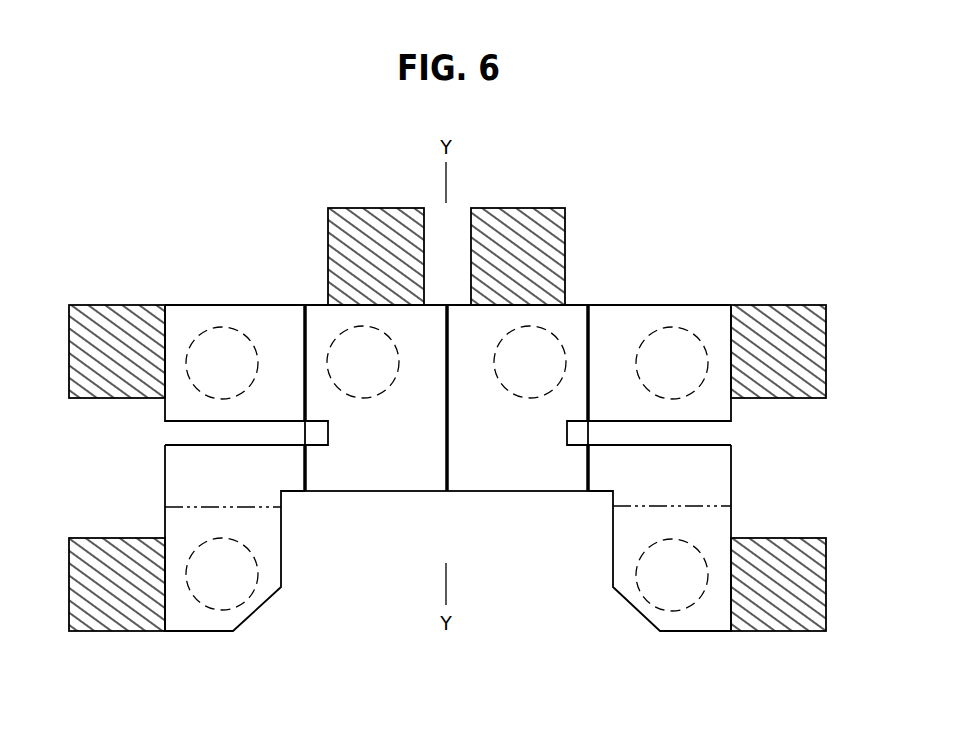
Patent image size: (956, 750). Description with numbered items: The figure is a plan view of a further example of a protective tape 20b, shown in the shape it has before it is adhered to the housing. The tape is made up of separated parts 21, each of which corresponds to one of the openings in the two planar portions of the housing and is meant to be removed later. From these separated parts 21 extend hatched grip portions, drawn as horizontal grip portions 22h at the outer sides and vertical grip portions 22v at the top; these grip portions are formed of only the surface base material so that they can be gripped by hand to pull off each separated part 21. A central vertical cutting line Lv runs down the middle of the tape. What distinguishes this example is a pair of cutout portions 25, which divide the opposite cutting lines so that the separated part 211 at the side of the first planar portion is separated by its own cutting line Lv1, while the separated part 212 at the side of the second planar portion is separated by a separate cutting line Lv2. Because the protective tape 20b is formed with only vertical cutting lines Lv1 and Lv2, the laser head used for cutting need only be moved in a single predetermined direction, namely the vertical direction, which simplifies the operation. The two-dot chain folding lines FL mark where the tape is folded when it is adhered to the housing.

The protective tape 20b is at (656, 303).
The separated part 21 is at (390, 460).
The separated part 211 is at (713, 318).
The separated part 212 is at (625, 565).
The horizontal grip portions 22h is at (112, 318).
The vertical grip portions 22v is at (338, 248).
The cutout portions 25 is at (716, 443).
The folding line FL is at (182, 507).
The vertical cutting line Lv is at (450, 462).
The cutting line Lv1 is at (592, 322).
The cutting line Lv2 is at (585, 468).